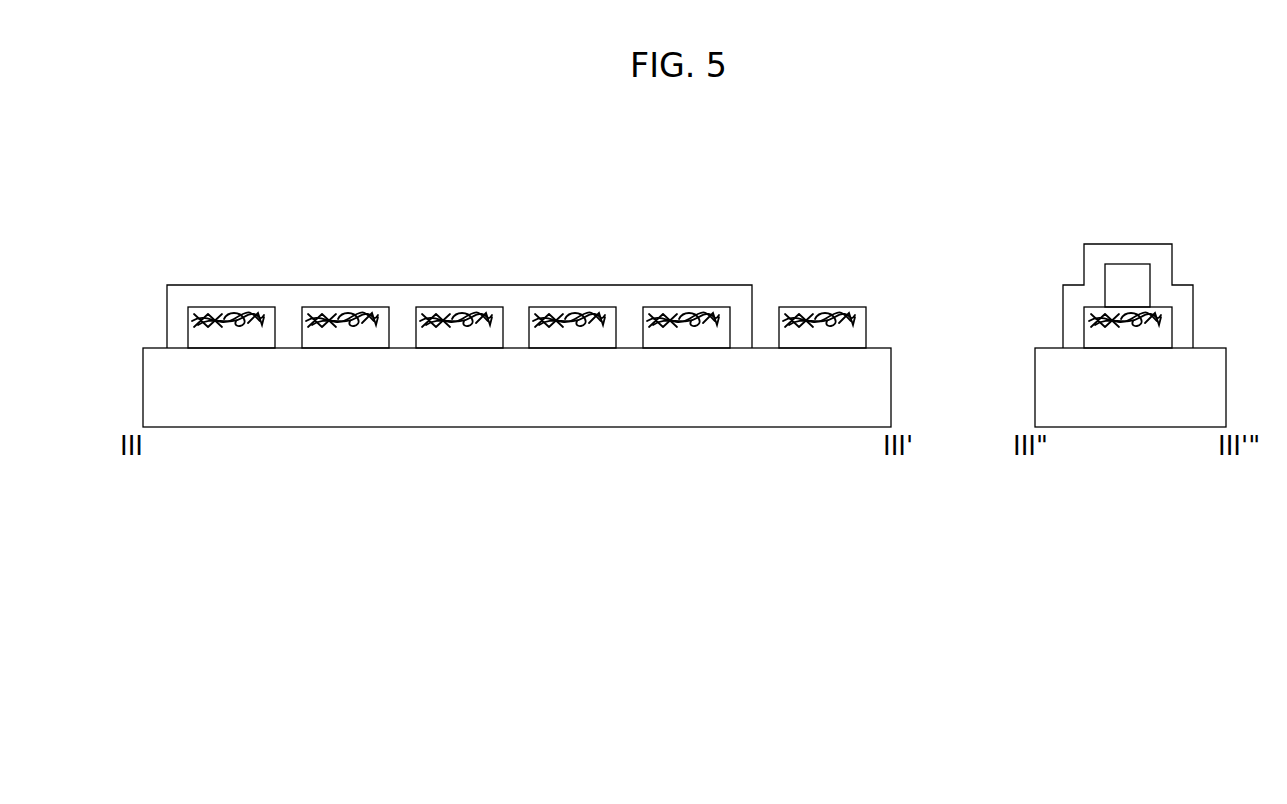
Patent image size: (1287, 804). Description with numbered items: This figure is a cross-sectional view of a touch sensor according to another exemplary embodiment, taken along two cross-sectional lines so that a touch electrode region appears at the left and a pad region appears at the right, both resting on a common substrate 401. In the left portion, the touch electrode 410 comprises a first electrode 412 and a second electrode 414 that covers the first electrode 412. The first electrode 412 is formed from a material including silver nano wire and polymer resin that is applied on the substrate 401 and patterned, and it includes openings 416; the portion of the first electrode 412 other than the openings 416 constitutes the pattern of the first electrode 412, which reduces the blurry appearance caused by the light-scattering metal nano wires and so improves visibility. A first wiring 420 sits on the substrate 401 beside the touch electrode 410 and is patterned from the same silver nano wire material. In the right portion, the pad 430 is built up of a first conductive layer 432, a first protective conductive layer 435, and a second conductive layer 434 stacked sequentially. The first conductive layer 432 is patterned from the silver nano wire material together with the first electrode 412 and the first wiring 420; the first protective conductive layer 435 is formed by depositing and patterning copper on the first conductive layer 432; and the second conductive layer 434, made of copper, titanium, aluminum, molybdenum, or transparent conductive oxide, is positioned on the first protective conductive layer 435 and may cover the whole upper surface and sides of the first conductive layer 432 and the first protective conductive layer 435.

The substrate 401 is at (455, 413).
The touch electrode 410 is at (457, 410).
The first electrode 412 is at (227, 337).
The second electrode 414 is at (176, 337).
The openings 416 is at (290, 352).
The first wiring 420 is at (797, 318).
The pad 430 is at (1130, 404).
The first conductive layer 432 is at (1117, 325).
The second conductive layer 434 is at (1183, 338).
The first protective conductive layer 435 is at (1112, 298).